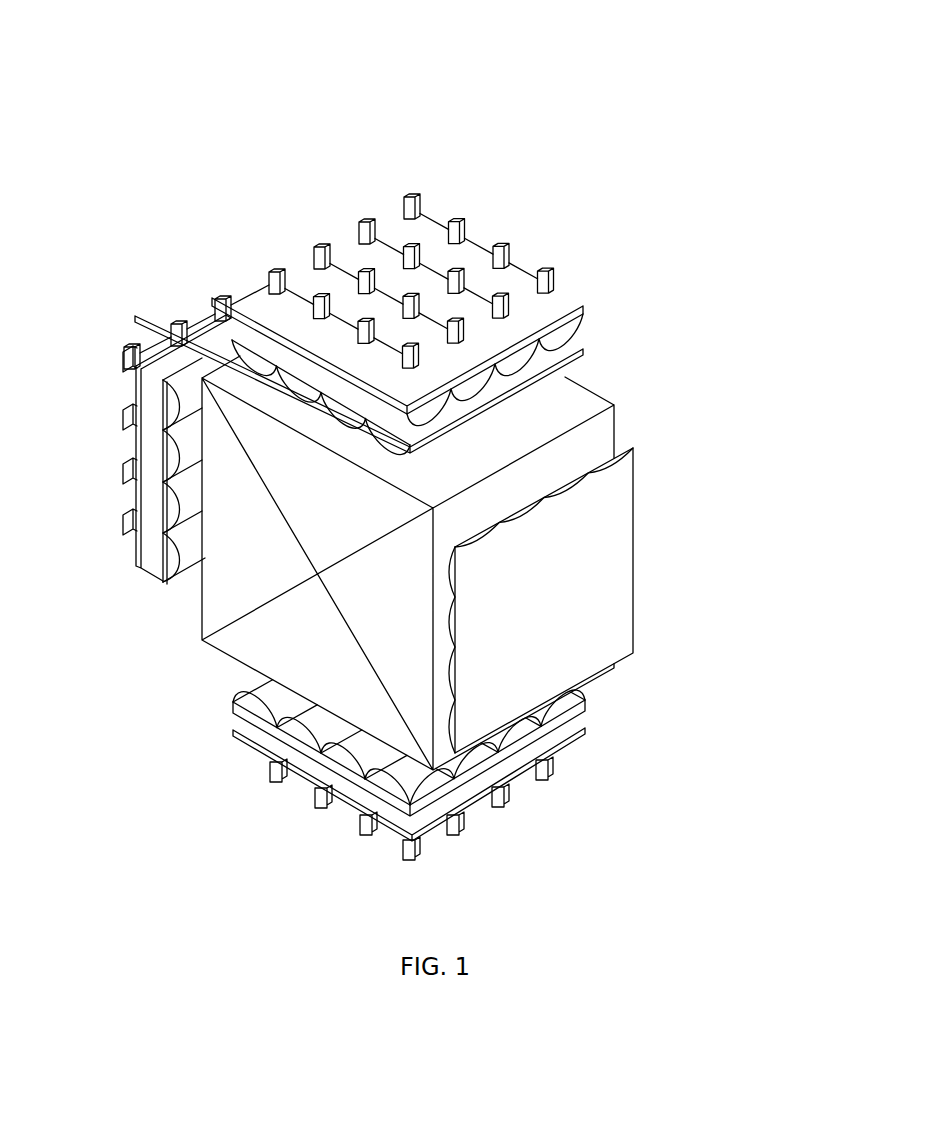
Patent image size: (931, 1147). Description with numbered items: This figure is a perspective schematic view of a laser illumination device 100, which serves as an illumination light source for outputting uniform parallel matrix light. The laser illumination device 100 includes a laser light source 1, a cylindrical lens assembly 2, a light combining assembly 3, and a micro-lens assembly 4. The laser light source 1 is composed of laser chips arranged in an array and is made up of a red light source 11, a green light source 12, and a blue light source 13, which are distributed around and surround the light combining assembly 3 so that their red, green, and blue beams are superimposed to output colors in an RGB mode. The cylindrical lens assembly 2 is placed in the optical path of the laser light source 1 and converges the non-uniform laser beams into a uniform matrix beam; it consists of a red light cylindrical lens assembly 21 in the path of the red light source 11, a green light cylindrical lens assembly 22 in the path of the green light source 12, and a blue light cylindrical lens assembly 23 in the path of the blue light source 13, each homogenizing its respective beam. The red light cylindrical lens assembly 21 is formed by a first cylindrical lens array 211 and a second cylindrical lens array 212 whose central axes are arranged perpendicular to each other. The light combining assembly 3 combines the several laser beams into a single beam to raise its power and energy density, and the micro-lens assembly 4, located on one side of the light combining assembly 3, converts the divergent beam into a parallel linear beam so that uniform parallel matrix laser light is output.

The laser illumination device 100 is at (372, 66).
The laser light source 1 is at (85, 697).
The red light source 11 is at (134, 520).
The green light source 12 is at (268, 775).
The blue light source 13 is at (330, 305).
The cylindrical lens assembly 2 is at (738, 304).
The red light cylindrical lens assembly 21 is at (684, 351).
The first cylindrical lens array 211 is at (587, 304).
The second cylindrical lens array 212 is at (590, 345).
The green light cylindrical lens assembly 22 is at (180, 383).
The blue light cylindrical lens assembly 23 is at (565, 688).
The light combining assembly 3 is at (410, 686).
The micro-lens assembly 4 is at (613, 605).